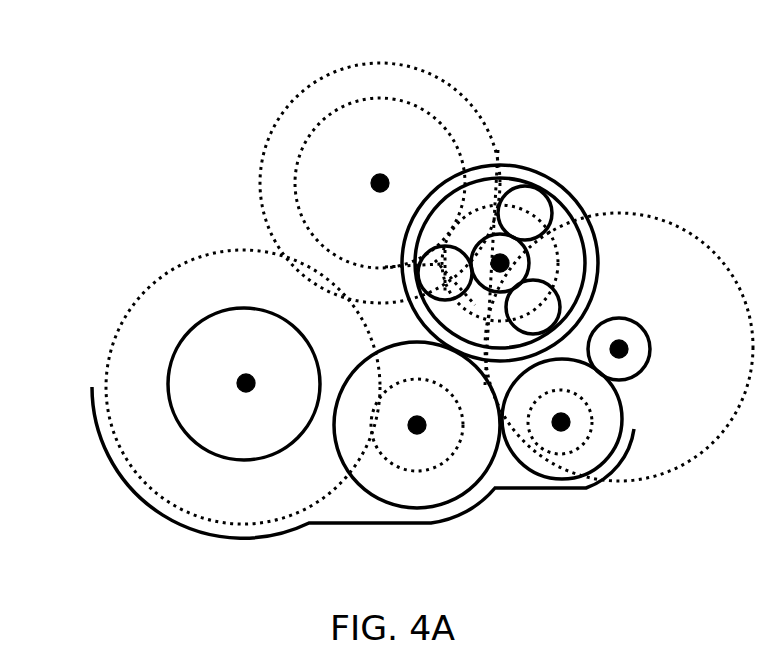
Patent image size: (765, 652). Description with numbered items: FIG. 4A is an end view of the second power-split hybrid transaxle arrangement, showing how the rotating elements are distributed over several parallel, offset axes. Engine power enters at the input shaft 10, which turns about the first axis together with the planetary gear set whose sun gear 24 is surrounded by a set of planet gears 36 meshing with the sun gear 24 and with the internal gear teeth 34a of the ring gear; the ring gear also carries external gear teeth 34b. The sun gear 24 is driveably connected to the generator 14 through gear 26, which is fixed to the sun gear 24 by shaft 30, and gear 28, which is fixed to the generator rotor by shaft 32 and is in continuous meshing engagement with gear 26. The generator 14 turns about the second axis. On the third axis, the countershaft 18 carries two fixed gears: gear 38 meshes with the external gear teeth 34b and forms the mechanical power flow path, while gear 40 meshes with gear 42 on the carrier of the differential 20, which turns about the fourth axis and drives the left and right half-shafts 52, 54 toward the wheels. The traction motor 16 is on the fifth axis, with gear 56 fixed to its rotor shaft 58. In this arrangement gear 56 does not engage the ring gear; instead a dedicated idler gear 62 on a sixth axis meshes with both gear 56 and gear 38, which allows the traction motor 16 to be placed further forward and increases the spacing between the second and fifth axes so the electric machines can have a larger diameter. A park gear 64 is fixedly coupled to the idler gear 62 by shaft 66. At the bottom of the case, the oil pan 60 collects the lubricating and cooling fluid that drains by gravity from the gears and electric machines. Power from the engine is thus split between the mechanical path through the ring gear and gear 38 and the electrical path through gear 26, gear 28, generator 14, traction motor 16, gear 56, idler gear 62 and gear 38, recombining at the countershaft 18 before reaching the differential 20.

The input shaft 10 is at (500, 263).
The generator 14 is at (268, 137).
The traction motor 16 is at (680, 470).
The countershaft 18 is at (416, 434).
The differential 20 is at (218, 312).
The sun gear 24 is at (590, 215).
The gear 26 is at (462, 208).
The gear 28 is at (351, 107).
The shaft 30 is at (500, 263).
The shaft 32 is at (371, 178).
The internal gear teeth 34a is at (483, 185).
The external gear teeth 34b is at (548, 214).
The planet gears 36 is at (558, 298).
The gear 38 is at (368, 497).
The gear 40 is at (430, 470).
The gear 42 is at (130, 305).
The left half-shaft 52 is at (246, 390).
The right half-shaft 54 is at (246, 383).
The gear 56 is at (627, 320).
The rotor shaft 58 is at (628, 348).
The oil pan 60 is at (113, 477).
The idler gear 62 is at (622, 414).
The park gear 64 is at (553, 453).
The shaft 66 is at (565, 437).